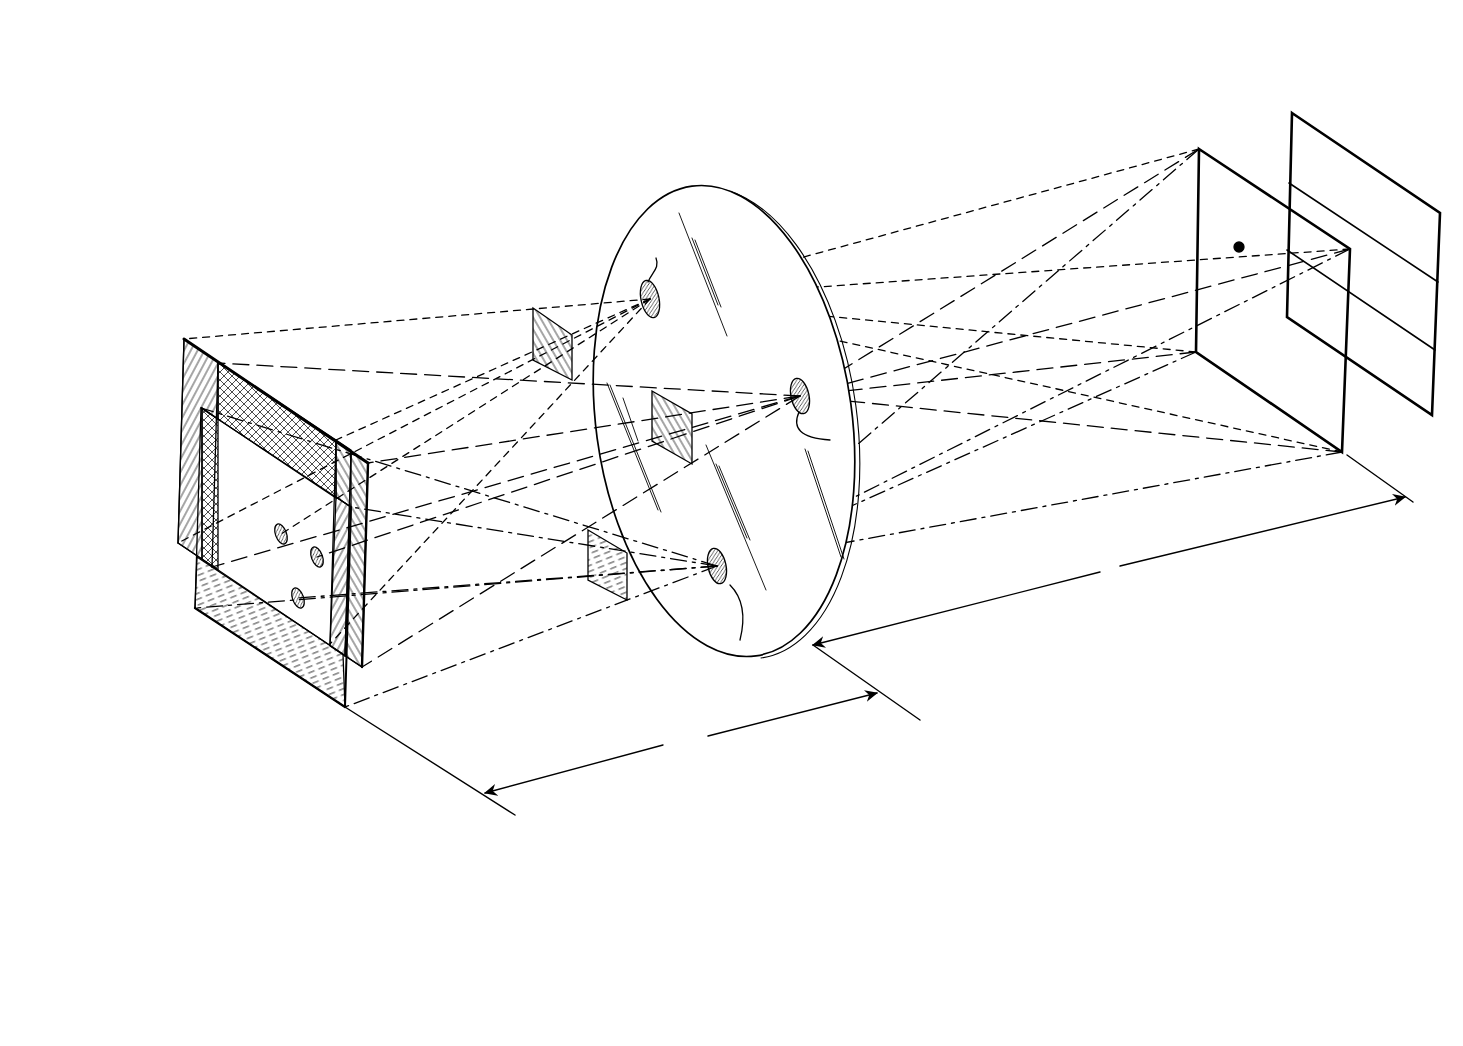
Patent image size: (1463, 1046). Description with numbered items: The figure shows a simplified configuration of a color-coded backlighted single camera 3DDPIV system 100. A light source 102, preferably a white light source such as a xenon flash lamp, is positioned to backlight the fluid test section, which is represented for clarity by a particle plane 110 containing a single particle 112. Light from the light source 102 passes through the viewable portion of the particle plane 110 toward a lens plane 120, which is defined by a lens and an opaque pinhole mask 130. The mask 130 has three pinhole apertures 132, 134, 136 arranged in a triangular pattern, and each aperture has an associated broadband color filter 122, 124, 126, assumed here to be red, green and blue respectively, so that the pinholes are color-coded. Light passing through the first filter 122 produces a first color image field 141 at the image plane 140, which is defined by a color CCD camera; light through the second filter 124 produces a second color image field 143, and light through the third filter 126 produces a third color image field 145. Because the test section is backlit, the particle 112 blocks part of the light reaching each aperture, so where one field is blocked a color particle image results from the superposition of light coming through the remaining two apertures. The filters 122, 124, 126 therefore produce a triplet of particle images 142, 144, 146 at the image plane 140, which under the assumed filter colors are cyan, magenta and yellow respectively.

The 3DDPIV system 100 is at (290, 131).
The light source 102 is at (1288, 192).
The particle plane 110 is at (1197, 146).
The particle 112 is at (1234, 245).
The lens plane 120 is at (737, 386).
The first color filter 122 is at (812, 406).
The second color filter 124 is at (642, 293).
The third color filter 126 is at (710, 582).
The pinhole mask 130 is at (826, 584).
The pinhole aperture 132 is at (830, 440).
The pinhole aperture 134 is at (648, 280).
The pinhole aperture 136 is at (740, 640).
The image plane 140 is at (273, 476).
The first color image field 141 is at (350, 478).
The particle image 142 is at (311, 560).
The second color image field 143 is at (192, 372).
The particle image 144 is at (275, 536).
The third color image field 145 is at (238, 628).
The particle image 146 is at (294, 610).